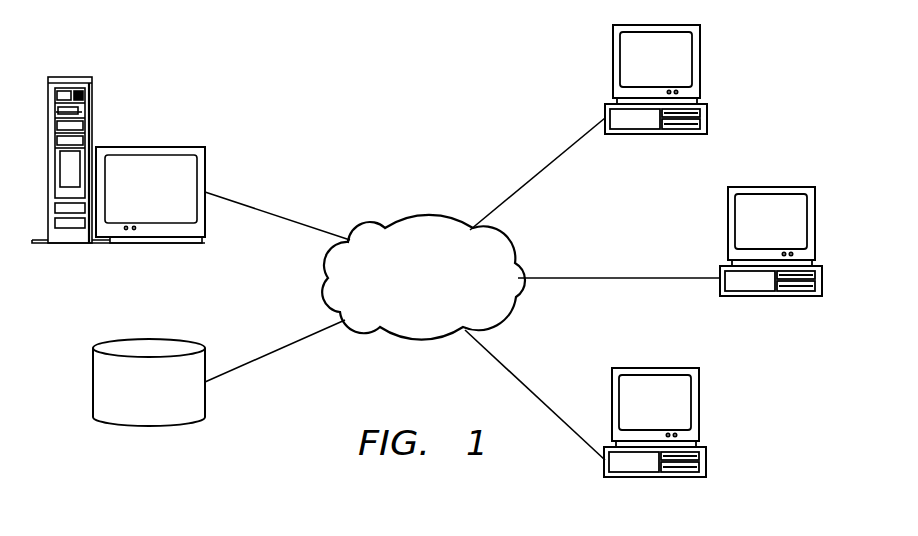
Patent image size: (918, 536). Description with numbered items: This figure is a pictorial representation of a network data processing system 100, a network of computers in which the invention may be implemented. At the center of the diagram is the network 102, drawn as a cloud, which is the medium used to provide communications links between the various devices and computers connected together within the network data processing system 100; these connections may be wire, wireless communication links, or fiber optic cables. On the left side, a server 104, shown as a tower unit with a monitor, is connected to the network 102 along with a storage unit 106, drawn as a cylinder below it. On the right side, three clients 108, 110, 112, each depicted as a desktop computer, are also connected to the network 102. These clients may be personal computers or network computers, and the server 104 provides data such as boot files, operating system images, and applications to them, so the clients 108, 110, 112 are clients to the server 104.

The network data processing system 100 is at (290, 85).
The network 102 is at (442, 305).
The server 104 is at (92, 101).
The storage unit 106 is at (93, 383).
The client 108 is at (700, 68).
The client 110 is at (817, 228).
The client 112 is at (698, 410).